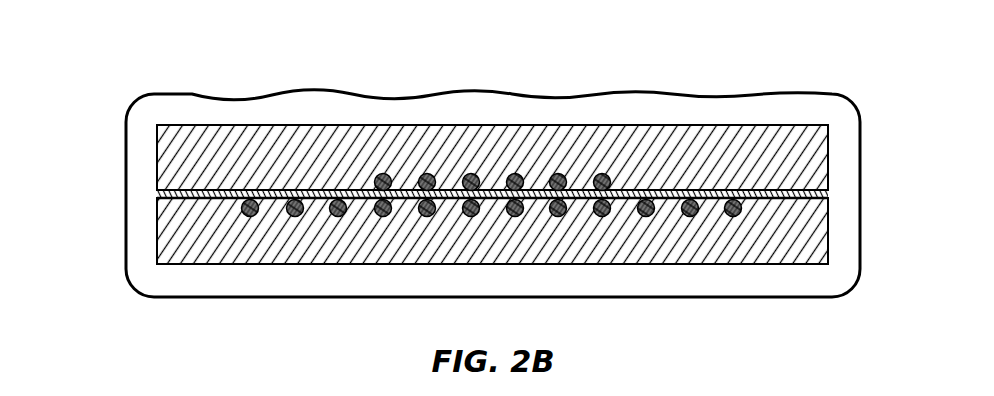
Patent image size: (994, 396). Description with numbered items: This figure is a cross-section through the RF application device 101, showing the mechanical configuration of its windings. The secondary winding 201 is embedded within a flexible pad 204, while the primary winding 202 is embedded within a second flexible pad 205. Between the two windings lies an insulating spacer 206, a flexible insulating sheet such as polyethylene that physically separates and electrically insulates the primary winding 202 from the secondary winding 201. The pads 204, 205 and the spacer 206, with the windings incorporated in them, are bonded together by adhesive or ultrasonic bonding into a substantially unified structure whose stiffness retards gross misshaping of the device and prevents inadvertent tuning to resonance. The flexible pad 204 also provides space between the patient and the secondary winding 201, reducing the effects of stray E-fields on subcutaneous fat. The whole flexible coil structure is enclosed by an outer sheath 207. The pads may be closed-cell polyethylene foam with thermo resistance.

The RF application device 101 is at (489, 184).
The secondary winding 201 is at (292, 216).
The primary winding 202 is at (380, 174).
The flexible pad 204 is at (184, 228).
The flexible pad 205 is at (184, 153).
The insulating spacer 206 is at (805, 183).
The outer sheath 207 is at (797, 93).